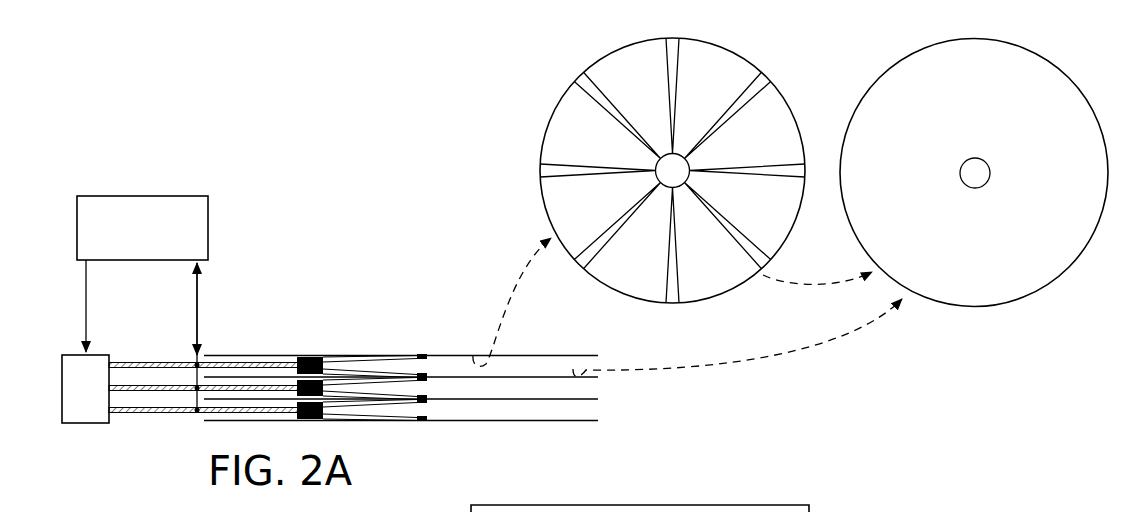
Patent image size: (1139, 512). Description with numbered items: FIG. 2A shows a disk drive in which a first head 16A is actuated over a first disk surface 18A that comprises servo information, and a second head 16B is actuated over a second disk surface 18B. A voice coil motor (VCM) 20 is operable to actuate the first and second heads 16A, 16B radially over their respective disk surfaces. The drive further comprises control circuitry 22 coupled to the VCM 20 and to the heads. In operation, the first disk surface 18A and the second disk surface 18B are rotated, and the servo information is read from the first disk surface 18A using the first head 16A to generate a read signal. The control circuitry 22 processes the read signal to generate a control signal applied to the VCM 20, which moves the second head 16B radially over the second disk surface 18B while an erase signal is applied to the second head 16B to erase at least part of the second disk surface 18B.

The voice coil motor (VCM) 20 is at (86, 424).
The control circuitry 22 is at (209, 222).
The first head 16A is at (420, 354).
The second head 16B is at (427, 373).
The first disk surface 18A is at (538, 205).
The second disk surface 18B is at (1065, 283).